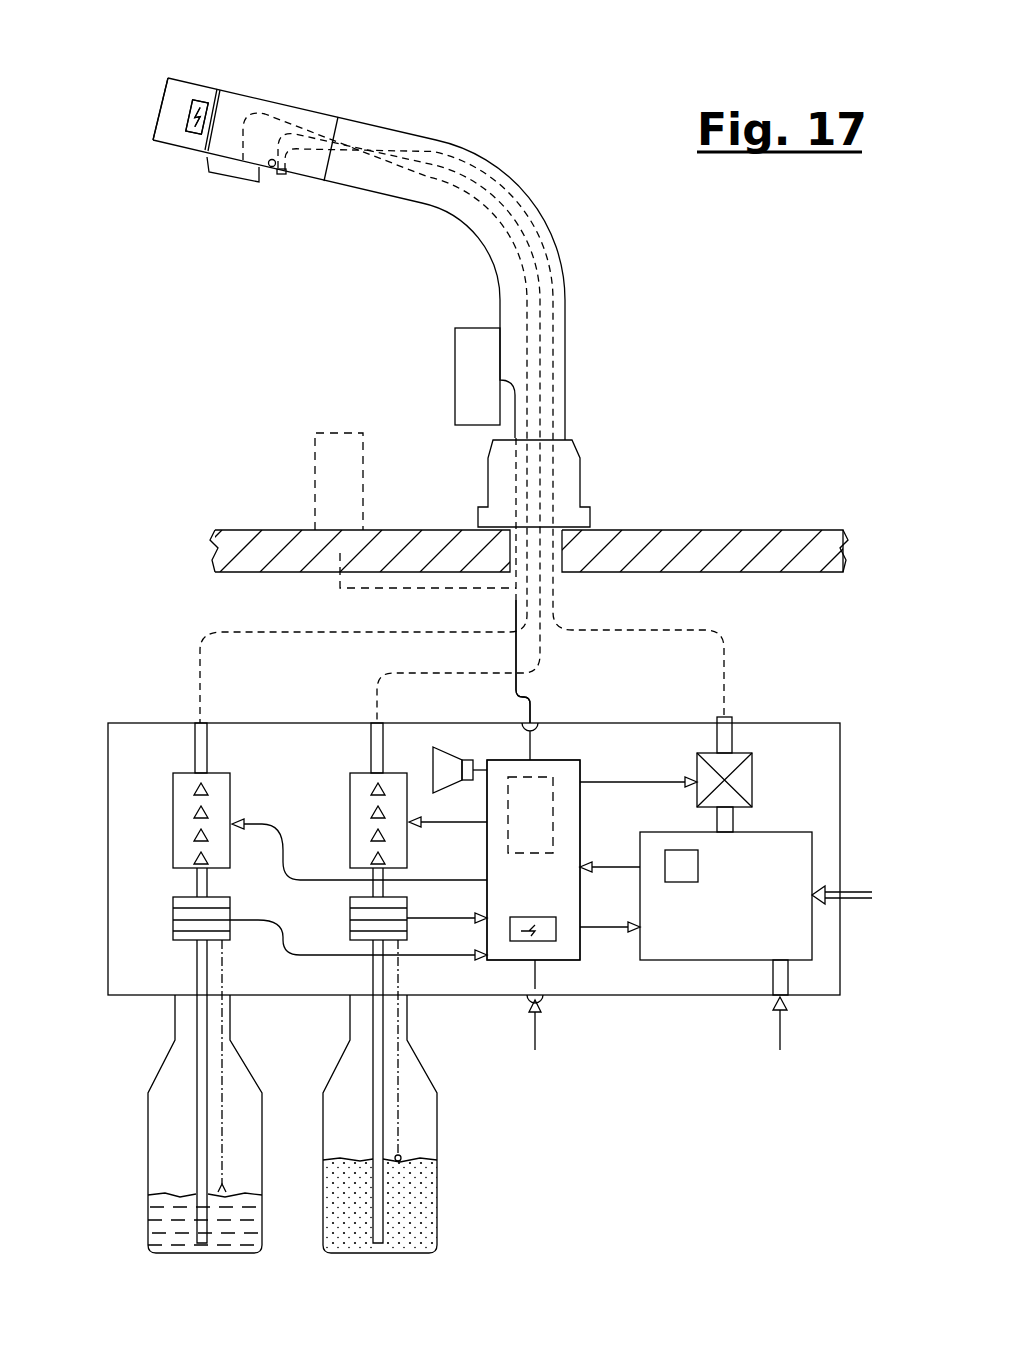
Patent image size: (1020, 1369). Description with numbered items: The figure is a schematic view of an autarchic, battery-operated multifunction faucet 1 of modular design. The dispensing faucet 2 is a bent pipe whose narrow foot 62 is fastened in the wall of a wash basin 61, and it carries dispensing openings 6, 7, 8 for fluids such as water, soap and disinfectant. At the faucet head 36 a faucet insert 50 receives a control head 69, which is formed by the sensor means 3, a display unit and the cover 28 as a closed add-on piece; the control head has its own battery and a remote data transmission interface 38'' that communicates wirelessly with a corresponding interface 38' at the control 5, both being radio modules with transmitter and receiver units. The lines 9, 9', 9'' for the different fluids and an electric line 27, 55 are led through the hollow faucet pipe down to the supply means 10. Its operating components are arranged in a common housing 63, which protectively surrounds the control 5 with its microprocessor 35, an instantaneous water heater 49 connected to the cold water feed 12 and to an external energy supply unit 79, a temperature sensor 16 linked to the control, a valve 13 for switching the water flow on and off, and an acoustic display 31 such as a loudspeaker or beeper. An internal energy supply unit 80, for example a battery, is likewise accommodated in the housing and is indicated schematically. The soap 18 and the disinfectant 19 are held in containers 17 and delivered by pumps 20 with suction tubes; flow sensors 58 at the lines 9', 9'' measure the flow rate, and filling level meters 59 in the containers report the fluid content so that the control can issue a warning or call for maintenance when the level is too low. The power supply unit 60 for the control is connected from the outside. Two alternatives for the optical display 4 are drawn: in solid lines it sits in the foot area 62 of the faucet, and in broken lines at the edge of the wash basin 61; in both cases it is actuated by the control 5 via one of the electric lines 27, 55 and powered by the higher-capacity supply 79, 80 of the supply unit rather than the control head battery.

The multifunctional faucet 1 is at (615, 362).
The dispensing faucet 2 is at (490, 175).
The sensor means 3 is at (153, 143).
The optical display 4 is at (473, 383).
The control 5 is at (497, 962).
The dispensing opening 6 is at (221, 166).
The dispensing opening 7 is at (272, 167).
The dispensing opening 8 is at (283, 174).
The line 9 is at (541, 421).
The line 9' is at (453, 428).
The line 9'' is at (320, 418).
The supply means 10 is at (585, 1100).
The water feed 12 is at (782, 1030).
The valve 13 is at (745, 780).
The temperature sensor 16 is at (685, 870).
The container 17 is at (148, 1122).
The soap 18 is at (352, 1227).
The disinfectant 19 is at (180, 1232).
The pump 20 is at (185, 800).
The electric line 27 is at (516, 690).
The cover 28 is at (185, 82).
The acoustic display 31 is at (444, 765).
The microprocessor 35 is at (533, 860).
The faucet head 36 is at (160, 108).
The remote data transmission interface 38' is at (542, 907).
The remote data transmission interface 38'' is at (161, 173).
The instantaneous water heater 49 is at (678, 933).
The faucet insert 50 is at (258, 105).
The power and signal line 55 is at (523, 661).
The flow sensor 58 is at (180, 905).
The filling level meter 59 is at (226, 1188).
The power supply unit 60 is at (540, 1025).
The wash basin 61 is at (668, 540).
The foot 62 is at (500, 488).
The housing 63 is at (845, 760).
The control head 69 is at (197, 117).
The energy supply unit 79 is at (857, 892).
The internal energy supply unit 80 is at (540, 793).